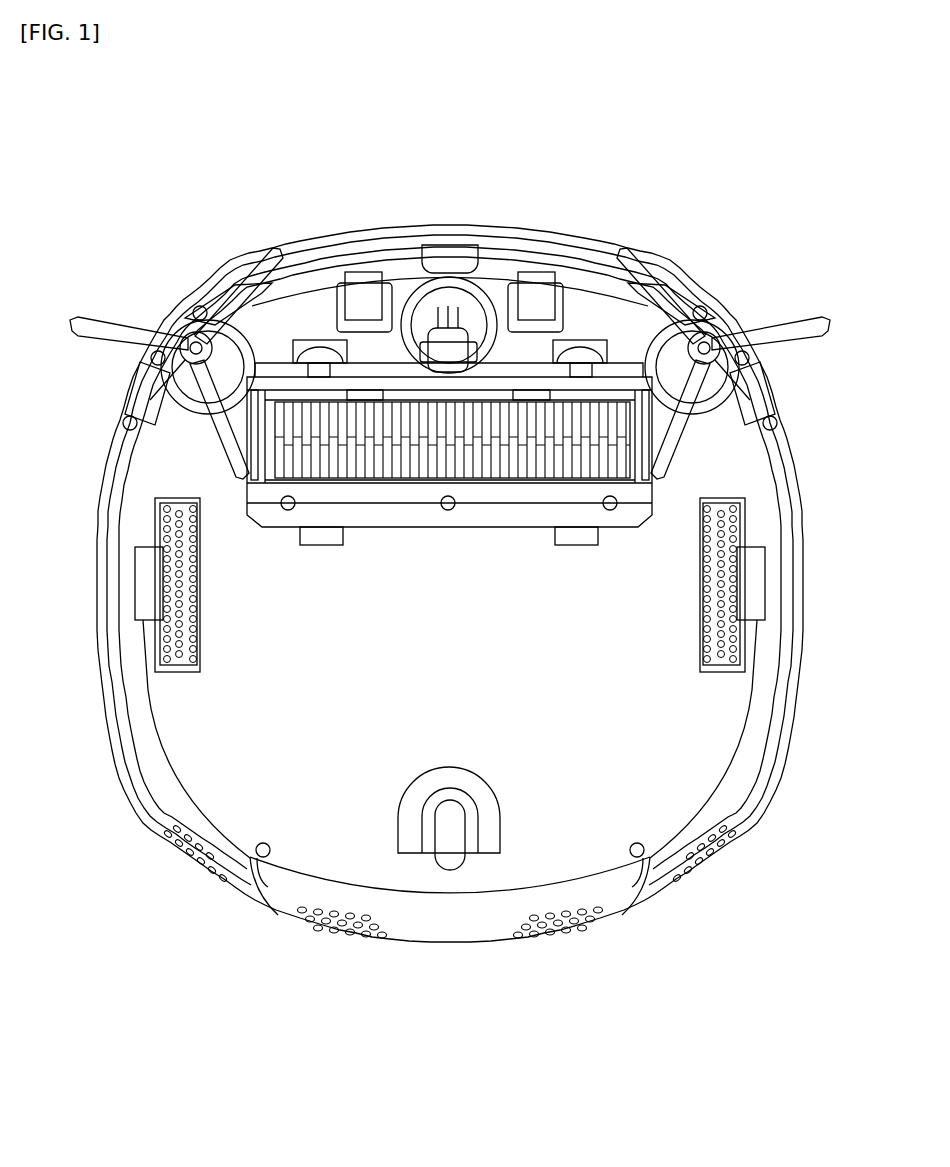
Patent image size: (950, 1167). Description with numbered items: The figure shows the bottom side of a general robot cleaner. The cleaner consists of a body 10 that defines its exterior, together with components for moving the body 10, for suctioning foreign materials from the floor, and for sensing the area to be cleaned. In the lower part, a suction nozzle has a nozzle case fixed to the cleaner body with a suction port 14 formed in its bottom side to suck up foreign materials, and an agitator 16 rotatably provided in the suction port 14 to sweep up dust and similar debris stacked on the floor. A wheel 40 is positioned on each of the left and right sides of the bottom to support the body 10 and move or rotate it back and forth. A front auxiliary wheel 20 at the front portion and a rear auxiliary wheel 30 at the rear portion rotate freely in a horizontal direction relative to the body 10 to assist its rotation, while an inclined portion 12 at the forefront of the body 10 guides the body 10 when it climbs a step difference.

The body 10 is at (599, 220).
The inclined portion 12 is at (522, 243).
The suction port 14 is at (300, 433).
The agitator 16 is at (620, 433).
The front auxiliary wheel 20 is at (425, 307).
The rear auxiliary wheel 30 is at (447, 855).
The wheel 40 is at (700, 637).